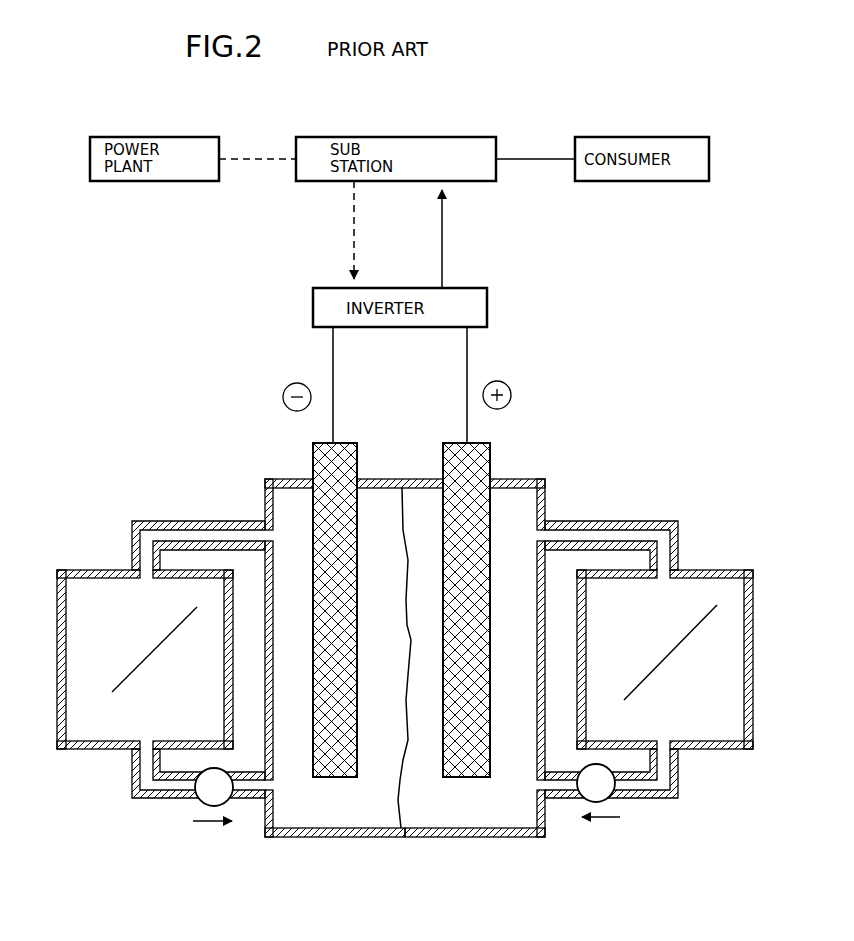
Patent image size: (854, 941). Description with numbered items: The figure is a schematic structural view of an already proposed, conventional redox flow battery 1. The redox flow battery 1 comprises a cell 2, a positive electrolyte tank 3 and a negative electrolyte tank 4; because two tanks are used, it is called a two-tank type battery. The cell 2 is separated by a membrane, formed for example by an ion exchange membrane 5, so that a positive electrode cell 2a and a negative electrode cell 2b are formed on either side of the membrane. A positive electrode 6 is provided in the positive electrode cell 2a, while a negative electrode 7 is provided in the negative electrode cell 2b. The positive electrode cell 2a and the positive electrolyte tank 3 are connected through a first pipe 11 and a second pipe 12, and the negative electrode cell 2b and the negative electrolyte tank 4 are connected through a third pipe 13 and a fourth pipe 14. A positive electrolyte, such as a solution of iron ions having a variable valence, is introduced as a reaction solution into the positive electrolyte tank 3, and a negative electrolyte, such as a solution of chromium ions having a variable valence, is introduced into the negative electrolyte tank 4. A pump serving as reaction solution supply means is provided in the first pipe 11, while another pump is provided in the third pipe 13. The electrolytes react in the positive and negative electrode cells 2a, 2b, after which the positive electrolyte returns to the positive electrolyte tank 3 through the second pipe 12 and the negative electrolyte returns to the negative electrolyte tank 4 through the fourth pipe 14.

The redox flow battery 1 is at (578, 447).
The cell 2 is at (413, 841).
The positive electrode cell 2a is at (519, 830).
The negative electrode cell 2b is at (296, 830).
The positive electrolyte tank 3 is at (736, 750).
The negative electrolyte tank 4 is at (75, 750).
The ion exchange membrane 5 is at (401, 812).
The positive electrode 6 is at (490, 453).
The negative electrode 7 is at (313, 453).
The first pipe 11 is at (655, 799).
The second pipe 12 is at (598, 521).
The third pipe 13 is at (167, 799).
The fourth pipe 14 is at (200, 521).